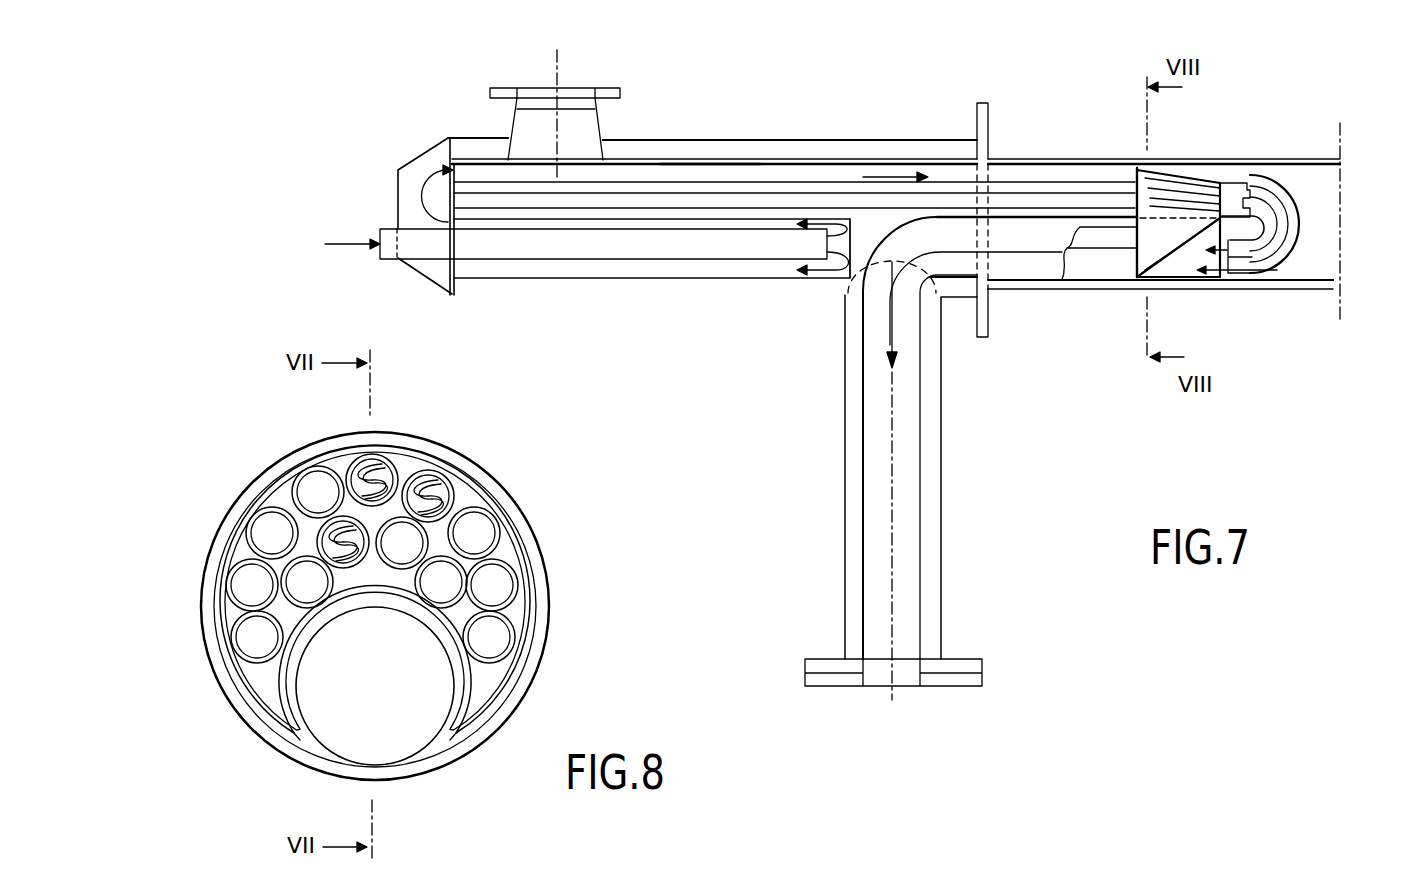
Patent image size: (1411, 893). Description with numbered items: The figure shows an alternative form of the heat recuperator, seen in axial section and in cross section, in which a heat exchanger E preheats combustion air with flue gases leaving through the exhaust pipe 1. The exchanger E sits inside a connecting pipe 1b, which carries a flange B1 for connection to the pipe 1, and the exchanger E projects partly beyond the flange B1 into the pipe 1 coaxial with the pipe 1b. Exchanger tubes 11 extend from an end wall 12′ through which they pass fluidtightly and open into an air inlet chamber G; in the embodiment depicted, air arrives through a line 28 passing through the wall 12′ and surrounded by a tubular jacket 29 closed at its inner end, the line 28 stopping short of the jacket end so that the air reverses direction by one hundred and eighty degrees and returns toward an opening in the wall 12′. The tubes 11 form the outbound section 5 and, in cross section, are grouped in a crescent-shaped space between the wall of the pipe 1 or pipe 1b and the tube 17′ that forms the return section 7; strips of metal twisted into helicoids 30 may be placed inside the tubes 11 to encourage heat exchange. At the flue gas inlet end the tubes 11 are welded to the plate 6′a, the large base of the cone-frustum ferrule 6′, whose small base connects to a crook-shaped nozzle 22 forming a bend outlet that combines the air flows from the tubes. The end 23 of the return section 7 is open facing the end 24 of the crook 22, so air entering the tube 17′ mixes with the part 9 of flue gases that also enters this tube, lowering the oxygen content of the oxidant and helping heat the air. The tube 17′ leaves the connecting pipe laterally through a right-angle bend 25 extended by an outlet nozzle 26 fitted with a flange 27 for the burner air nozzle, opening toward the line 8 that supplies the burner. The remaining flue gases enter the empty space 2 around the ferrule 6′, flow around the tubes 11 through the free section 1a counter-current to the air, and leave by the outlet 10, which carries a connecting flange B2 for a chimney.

In FIG. 7, the exhaust pipe 1 is at (1284, 155).
In FIG. 8, the exhaust pipe 1 is at (196, 588).
In FIG. 7, the free section 1a is at (873, 227).
In FIG. 7, the connecting pipe 1b is at (710, 163).
In FIG. 7, the empty space 2 is at (812, 162).
In FIG. 8, the empty space 2 is at (285, 463).
In FIG. 7, the outbound section 5 is at (663, 158).
In FIG. 7, the ferrule 6′ is at (1200, 193).
In FIG. 8, the ferrule 6′ is at (515, 555).
In FIG. 7, the plate 6′a is at (1128, 183).
In FIG. 7, the return section 7 is at (1114, 266).
In FIG. 8, the return section 7 is at (391, 790).
In FIG. 7, the line 8 is at (930, 492).
In FIG. 7, the part of the flue gases 9 is at (1240, 275).
In FIG. 8, the part of the flue gases 9 is at (299, 749).
In FIG. 7, the outlet 10 is at (587, 130).
In FIG. 7, the exchanger tubes 11 is at (773, 200).
In FIG. 8, the exchanger tubes 11 is at (236, 567).
In FIG. 7, the end wall 12′ is at (442, 140).
In FIG. 7, the tube 17′ is at (1075, 262).
In FIG. 8, the tube 17′ is at (434, 752).
In FIG. 7, the crook-shaped nozzle 22 is at (1234, 182).
In FIG. 7, the end of the return section 23 is at (1262, 262).
In FIG. 7, the end of the crook 24 is at (1247, 255).
In FIG. 7, the bend 25 is at (880, 266).
In FIG. 7, the outlet nozzle 26 is at (860, 496).
In FIG. 7, the flange 27 is at (959, 684).
In FIG. 7, the line 28 is at (433, 260).
In FIG. 7, the tubular jacket 29 is at (670, 272).
In FIG. 8, the strips of metal twisted into helicoids 30 is at (440, 480).
In FIG. 7, the flange B1 is at (989, 337).
In FIG. 7, the connecting flange B2 is at (502, 92).
In FIG. 7, the heat exchanger E is at (848, 157).
In FIG. 7, the air inlet chamber G is at (405, 202).